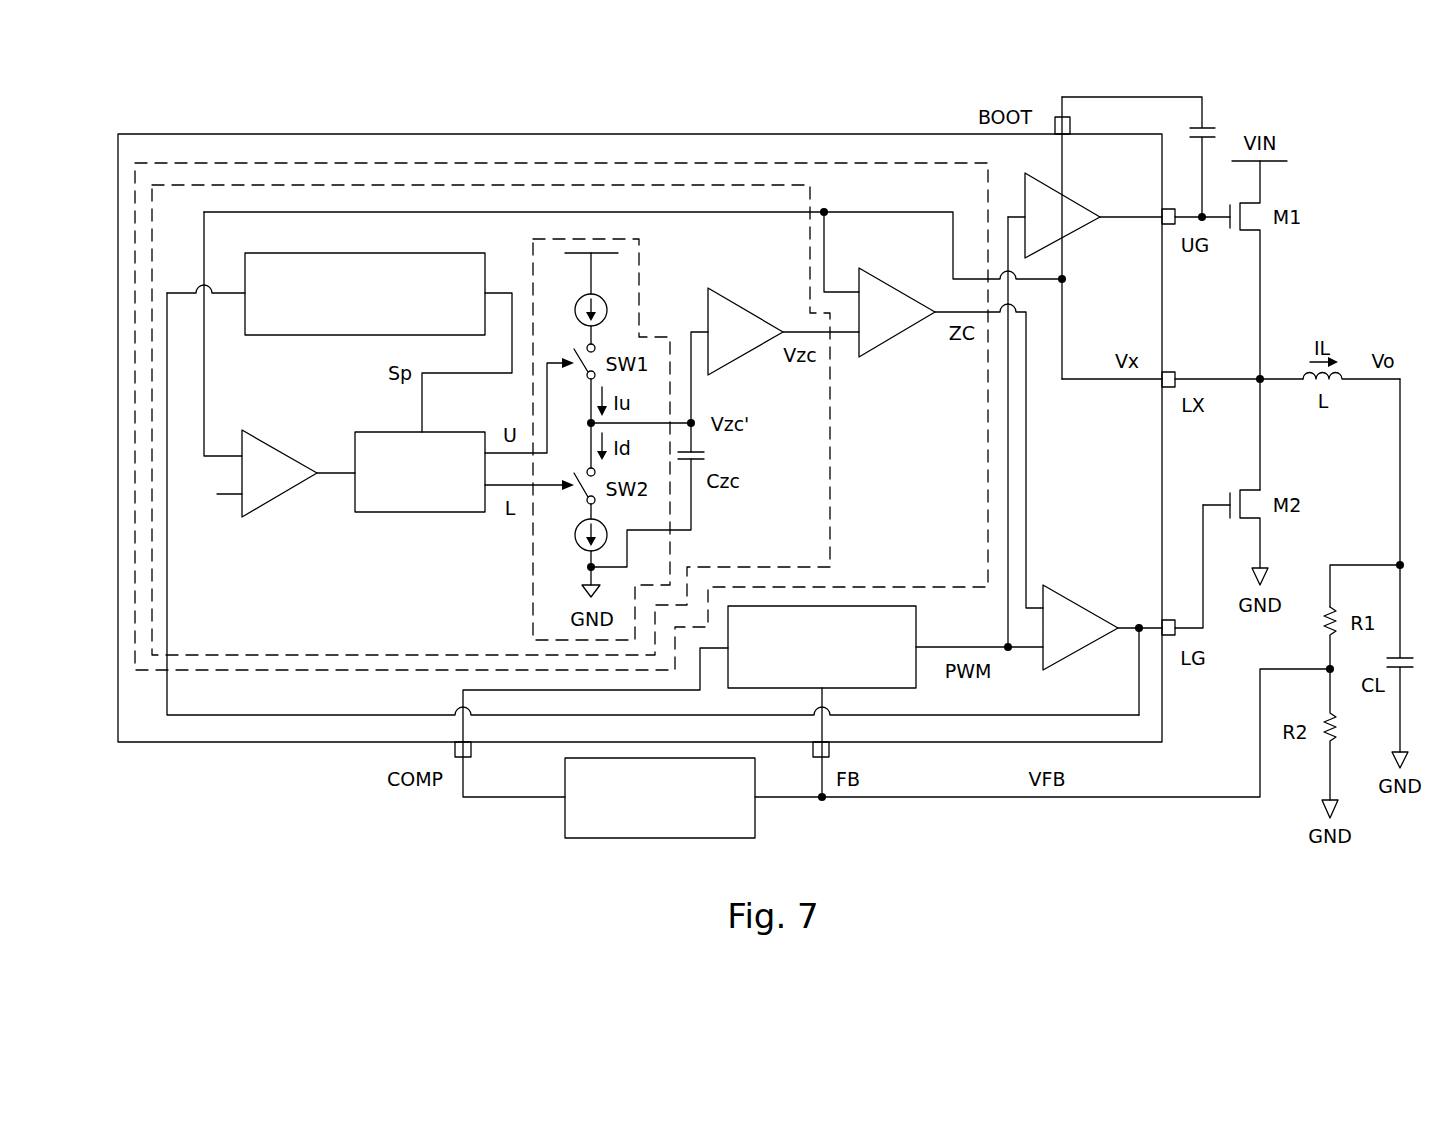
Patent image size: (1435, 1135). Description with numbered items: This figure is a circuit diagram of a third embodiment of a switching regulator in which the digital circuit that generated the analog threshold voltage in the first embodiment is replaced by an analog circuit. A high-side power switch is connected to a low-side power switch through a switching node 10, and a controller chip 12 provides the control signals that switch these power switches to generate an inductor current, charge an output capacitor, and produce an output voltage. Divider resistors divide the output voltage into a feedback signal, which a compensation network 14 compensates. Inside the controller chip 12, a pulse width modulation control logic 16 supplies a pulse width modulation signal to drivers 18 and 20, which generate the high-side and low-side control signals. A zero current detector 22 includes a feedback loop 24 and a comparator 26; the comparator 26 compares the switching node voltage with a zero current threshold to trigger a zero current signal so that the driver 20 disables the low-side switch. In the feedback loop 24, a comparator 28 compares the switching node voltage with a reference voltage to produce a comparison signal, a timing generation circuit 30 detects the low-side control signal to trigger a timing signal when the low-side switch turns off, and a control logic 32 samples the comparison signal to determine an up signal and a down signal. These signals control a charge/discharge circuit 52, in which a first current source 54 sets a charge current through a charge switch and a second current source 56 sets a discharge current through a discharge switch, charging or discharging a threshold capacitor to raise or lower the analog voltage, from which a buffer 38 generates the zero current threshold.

The switching node 10 is at (1256, 376).
The controller chip 12 is at (248, 743).
The compensation network 14 is at (650, 839).
The pulse width modulation control logic 16 is at (890, 605).
The driver 18 is at (1085, 230).
The driver 20 is at (1080, 600).
The zero current detector 22 is at (245, 672).
The feedback loop 24 is at (330, 656).
The comparator 26 is at (900, 290).
The comparator 28 is at (278, 447).
The timing generation circuit 30 is at (356, 336).
The control logic 32 is at (413, 513).
The buffer 38 is at (748, 305).
The charge/discharge circuit 52 is at (640, 266).
The first current source 54 is at (579, 302).
The second current source 56 is at (574, 538).